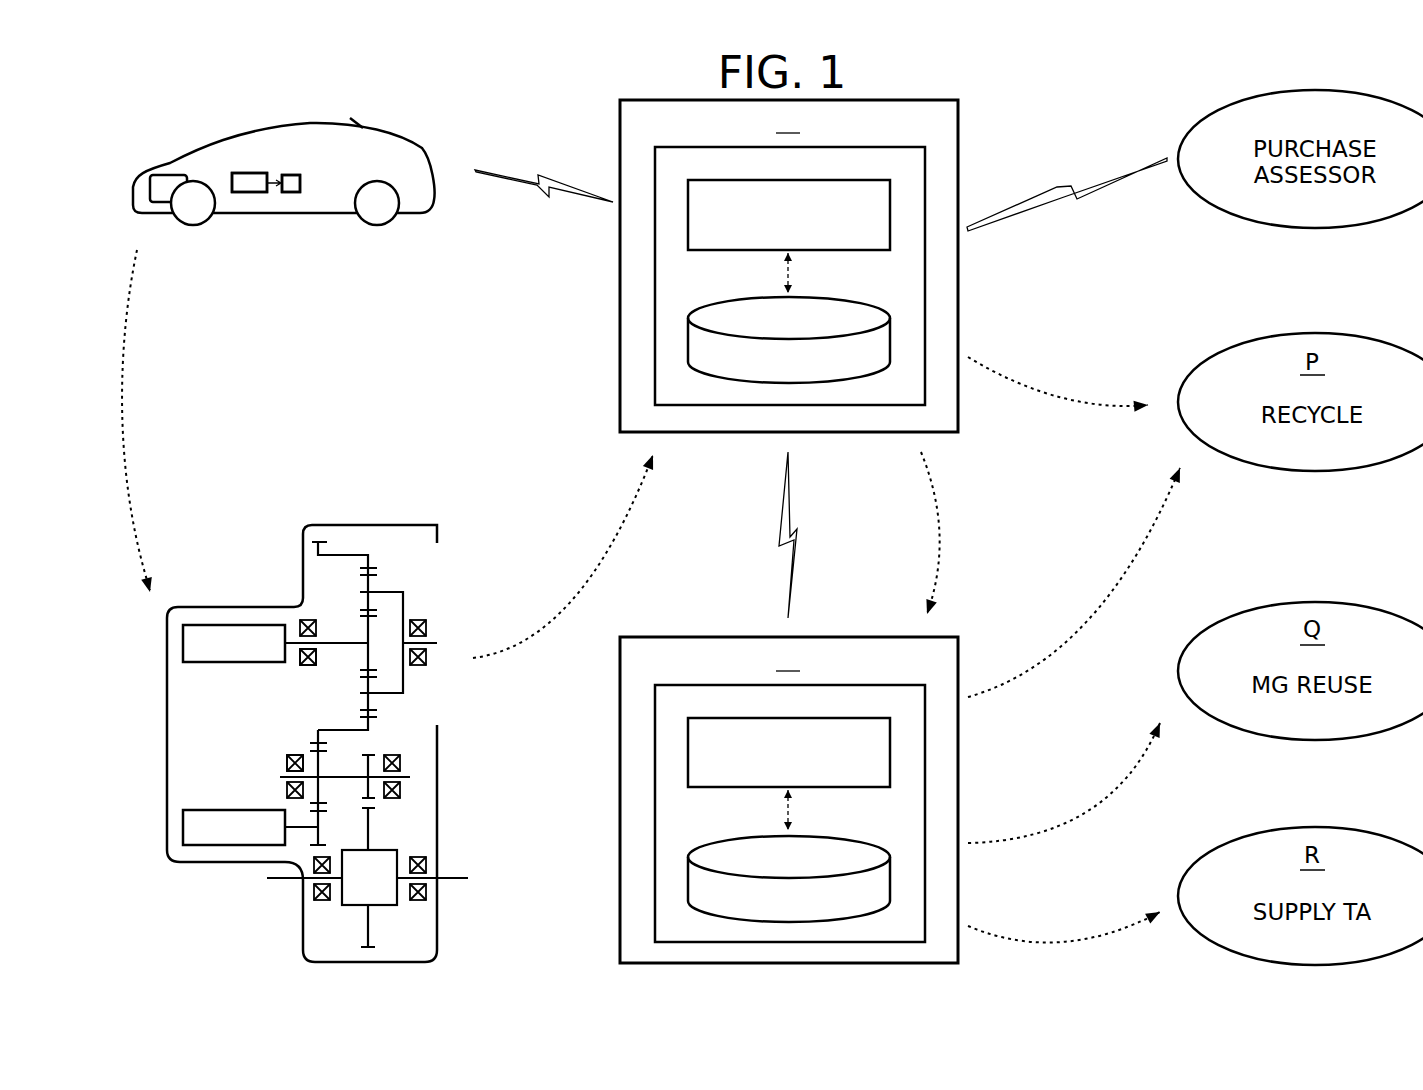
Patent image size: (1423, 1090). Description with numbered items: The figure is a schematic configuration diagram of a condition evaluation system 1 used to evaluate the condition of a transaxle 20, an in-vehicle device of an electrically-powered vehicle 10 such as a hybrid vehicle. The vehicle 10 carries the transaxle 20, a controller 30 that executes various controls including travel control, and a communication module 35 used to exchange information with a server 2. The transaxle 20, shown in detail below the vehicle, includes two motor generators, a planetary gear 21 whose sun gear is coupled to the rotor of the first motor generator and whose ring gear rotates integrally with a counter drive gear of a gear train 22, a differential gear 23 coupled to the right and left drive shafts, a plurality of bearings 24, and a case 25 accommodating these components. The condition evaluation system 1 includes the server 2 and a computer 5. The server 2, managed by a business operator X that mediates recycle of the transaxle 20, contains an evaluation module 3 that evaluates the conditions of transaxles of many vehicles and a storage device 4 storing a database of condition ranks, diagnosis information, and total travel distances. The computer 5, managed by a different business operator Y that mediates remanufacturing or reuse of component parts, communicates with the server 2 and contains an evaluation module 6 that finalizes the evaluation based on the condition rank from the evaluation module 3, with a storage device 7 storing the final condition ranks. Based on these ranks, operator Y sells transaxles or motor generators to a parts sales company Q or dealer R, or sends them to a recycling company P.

The condition evaluation system 1 is at (532, 478).
The server 2 is at (939, 265).
The evaluation module 3 is at (688, 215).
The storage device 4 is at (688, 343).
The computer 5 is at (939, 753).
The evaluation module 6 is at (688, 747).
The storage device 7 is at (688, 882).
The electrically-powered vehicle 10 is at (439, 153).
The transaxle 20 is at (148, 183).
The planetary gear 21 is at (391, 581).
The gear train 22 is at (334, 757).
The differential gear 23 is at (379, 832).
The bearings 24 is at (296, 670).
The case 25 is at (360, 525).
The controller 30 is at (243, 193).
The communication module 35 is at (291, 193).